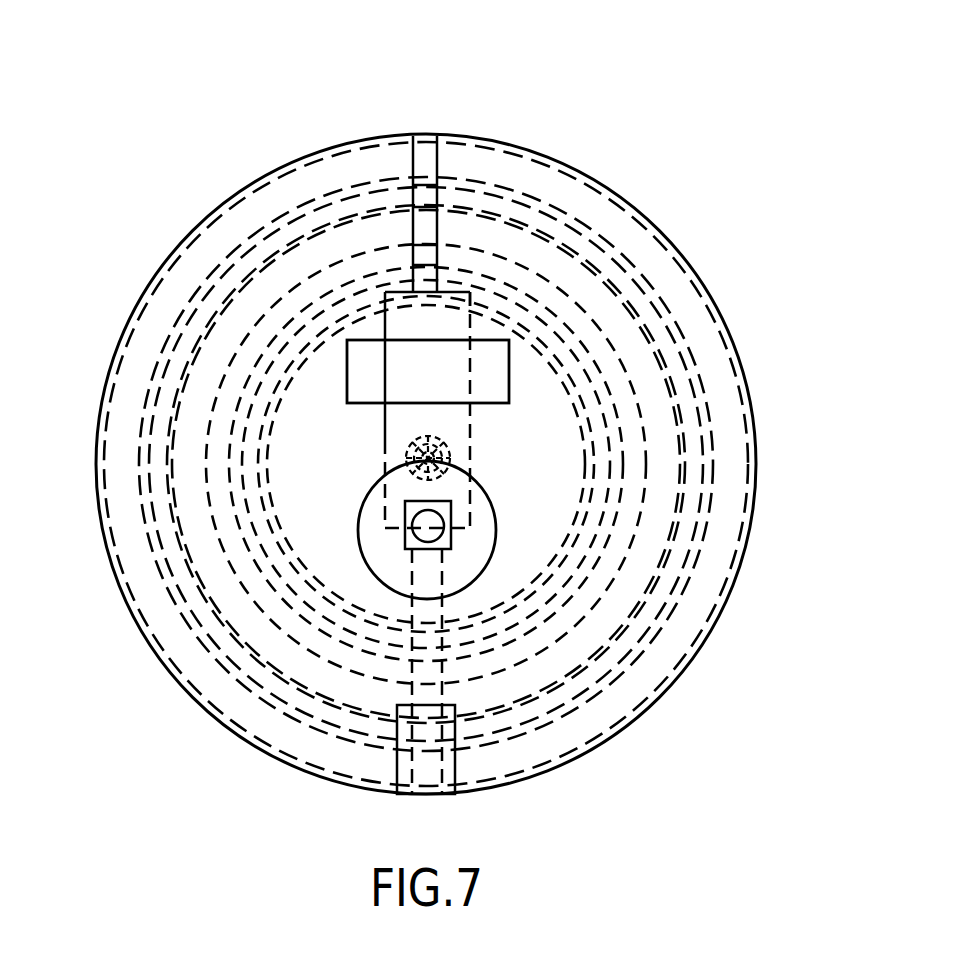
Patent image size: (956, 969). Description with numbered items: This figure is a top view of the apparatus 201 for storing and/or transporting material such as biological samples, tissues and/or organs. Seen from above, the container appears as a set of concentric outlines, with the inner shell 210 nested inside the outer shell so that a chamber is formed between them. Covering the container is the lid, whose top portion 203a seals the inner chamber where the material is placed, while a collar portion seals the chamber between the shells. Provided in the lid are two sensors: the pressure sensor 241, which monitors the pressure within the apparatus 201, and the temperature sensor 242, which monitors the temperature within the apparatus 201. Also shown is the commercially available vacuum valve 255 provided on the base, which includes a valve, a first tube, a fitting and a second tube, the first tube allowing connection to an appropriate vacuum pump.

The apparatus 201 is at (672, 103).
The inner shell 210 is at (322, 310).
The top portion 203a is at (724, 322).
The temperature sensor 242 is at (347, 387).
The vacuum valve 255 is at (395, 448).
The pressure sensor 241 is at (497, 516).